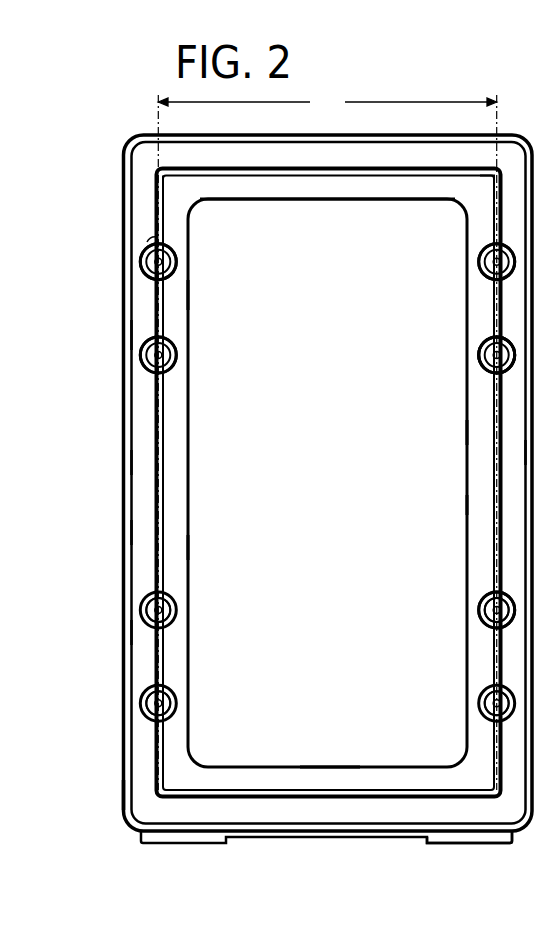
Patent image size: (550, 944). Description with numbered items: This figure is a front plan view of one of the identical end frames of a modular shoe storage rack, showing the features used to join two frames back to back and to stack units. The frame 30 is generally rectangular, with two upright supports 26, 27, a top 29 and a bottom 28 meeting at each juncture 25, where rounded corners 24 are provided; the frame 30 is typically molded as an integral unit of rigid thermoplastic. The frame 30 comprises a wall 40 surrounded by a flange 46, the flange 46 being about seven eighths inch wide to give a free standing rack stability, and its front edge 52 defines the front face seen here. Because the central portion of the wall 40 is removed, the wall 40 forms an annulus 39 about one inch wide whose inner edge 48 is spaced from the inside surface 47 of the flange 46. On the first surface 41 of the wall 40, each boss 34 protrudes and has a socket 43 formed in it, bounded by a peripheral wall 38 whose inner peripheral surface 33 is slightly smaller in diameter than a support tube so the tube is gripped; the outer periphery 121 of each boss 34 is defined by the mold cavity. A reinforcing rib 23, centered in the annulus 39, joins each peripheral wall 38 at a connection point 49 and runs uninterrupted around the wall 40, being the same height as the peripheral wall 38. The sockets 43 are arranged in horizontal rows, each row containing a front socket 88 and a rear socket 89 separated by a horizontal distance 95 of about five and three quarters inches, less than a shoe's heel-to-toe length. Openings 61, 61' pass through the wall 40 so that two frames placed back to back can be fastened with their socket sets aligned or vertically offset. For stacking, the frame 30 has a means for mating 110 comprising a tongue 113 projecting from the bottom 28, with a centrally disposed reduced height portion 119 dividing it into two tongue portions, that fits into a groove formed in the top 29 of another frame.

The rounded corners 24 is at (130, 140).
The horizontal distance 95 is at (327, 438).
The reinforcing rib 23 is at (155, 308).
The upright support 27 is at (178, 491).
The peripheral wall 38 is at (178, 258).
The reduced height portion 119 is at (278, 838).
The tongue 113 is at (458, 833).
The first surface 41 is at (192, 207).
The boss 34 is at (143, 250).
The inner peripheral surface 33 is at (157, 237).
The top 29 is at (351, 187).
The juncture 25 is at (493, 173).
The socket 43 is at (483, 353).
The wall 40 is at (178, 294).
The frame 30 is at (123, 333).
The front socket 88 is at (177, 353).
The rear socket 89 is at (487, 360).
The connection point 49 is at (492, 375).
The flange 46 is at (130, 462).
The inner edge 48 is at (188, 547).
The inside surface 47 is at (132, 543).
The annulus 39 is at (480, 505).
The upright support 26 is at (480, 530).
The outer periphery 121 is at (480, 597).
The opening 61 is at (454, 656).
The opening 61' is at (206, 656).
The front edge 52 is at (123, 632).
The bottom 28 is at (330, 778).
The means for mating 110 is at (143, 886).